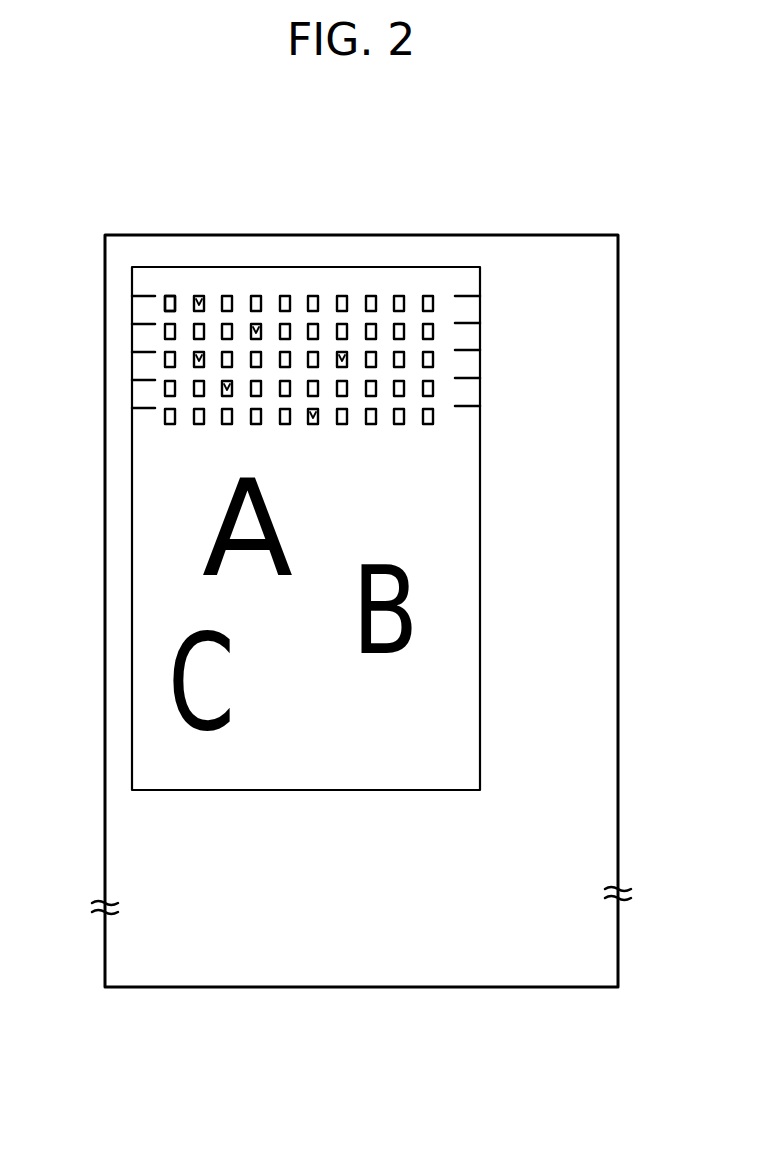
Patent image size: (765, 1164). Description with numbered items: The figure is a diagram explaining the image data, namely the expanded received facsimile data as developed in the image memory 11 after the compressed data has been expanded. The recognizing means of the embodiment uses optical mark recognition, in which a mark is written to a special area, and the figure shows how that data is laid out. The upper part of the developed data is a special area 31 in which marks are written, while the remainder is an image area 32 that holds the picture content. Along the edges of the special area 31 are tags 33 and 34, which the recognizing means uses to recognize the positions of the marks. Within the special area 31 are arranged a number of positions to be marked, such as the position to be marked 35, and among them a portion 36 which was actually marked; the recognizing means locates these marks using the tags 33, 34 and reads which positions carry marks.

The image memory 11 is at (620, 276).
The special area 31 is at (468, 335).
The image area 32 is at (460, 480).
The tag 33 is at (146, 293).
The tag 34 is at (146, 323).
The position to be marked 35 is at (166, 293).
The marked portion 36 is at (200, 293).